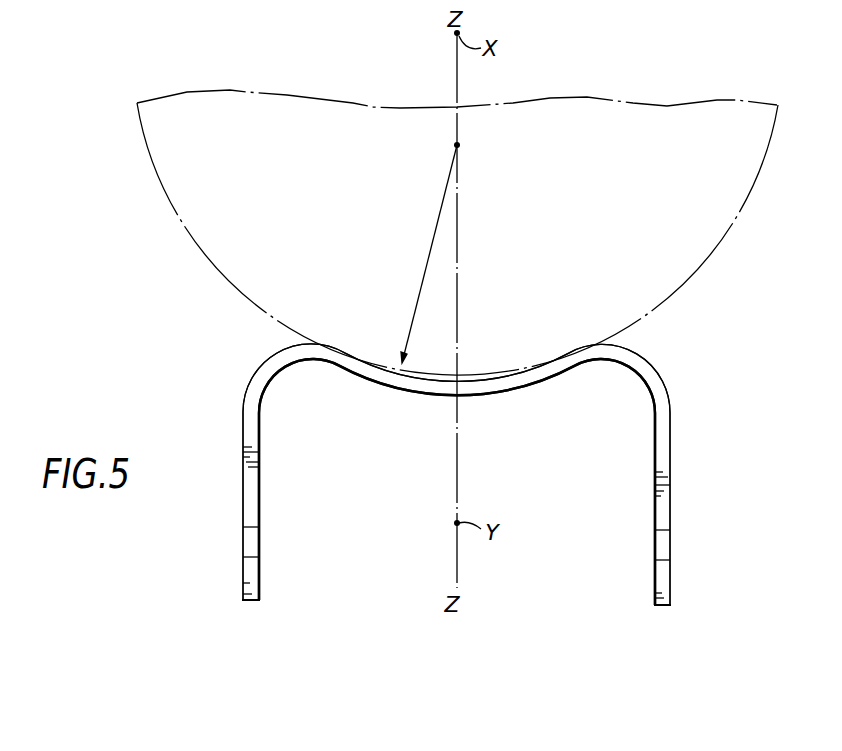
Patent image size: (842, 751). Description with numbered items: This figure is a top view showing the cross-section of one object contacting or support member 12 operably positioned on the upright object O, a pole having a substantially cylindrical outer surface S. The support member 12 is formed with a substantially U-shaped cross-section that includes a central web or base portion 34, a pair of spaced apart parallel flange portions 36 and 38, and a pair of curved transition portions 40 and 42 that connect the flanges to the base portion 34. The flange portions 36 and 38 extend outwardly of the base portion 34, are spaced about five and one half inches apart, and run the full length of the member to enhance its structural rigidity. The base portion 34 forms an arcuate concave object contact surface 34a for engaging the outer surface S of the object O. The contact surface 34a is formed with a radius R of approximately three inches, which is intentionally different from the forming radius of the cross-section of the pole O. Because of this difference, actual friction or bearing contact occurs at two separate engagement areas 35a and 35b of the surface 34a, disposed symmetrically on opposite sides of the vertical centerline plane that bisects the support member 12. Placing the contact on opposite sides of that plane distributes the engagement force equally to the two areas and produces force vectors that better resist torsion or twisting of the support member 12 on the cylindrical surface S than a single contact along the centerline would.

The support member 12 is at (672, 428).
The base portion 34 is at (478, 392).
The object contact surface 34a is at (522, 367).
The engagement area 35a is at (338, 346).
The engagement area 35b is at (577, 348).
The flange portion 36 is at (244, 583).
The flange portion 38 is at (668, 581).
The transition portion 40 is at (254, 384).
The transition portion 42 is at (648, 385).
The cylindrical outer surface S is at (177, 200).
The object O is at (700, 252).
The forming radius R is at (435, 227).